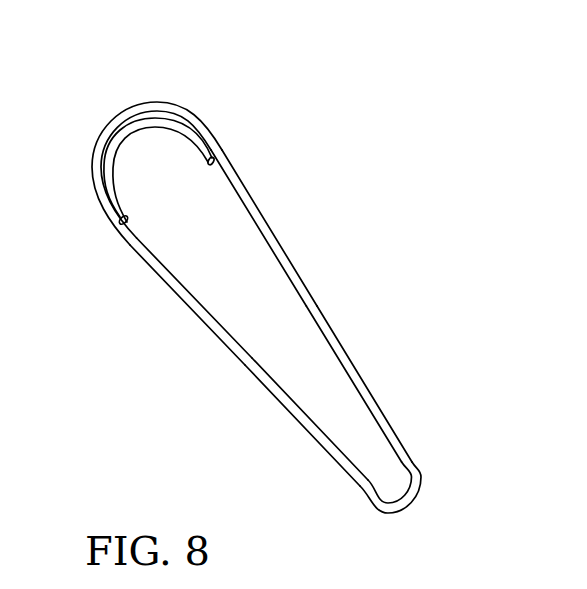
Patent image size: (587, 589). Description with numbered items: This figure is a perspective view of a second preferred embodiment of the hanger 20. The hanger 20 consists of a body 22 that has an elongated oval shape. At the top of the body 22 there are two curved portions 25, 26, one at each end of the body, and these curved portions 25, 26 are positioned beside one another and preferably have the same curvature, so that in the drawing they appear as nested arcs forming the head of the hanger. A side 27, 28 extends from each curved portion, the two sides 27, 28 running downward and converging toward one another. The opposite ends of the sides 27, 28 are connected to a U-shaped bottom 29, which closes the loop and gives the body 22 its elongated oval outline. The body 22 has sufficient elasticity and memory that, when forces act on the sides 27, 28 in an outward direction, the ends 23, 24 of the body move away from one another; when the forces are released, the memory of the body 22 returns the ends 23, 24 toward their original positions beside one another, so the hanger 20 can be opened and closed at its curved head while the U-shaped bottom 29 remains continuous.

The hanger 20 is at (254, 294).
The body 22 is at (267, 321).
The end 23 is at (231, 165).
The end 24 is at (129, 242).
The curved portion 25 is at (133, 127).
The curved portion 26 is at (190, 110).
The side 27 is at (258, 381).
The side 28 is at (326, 321).
The U-shaped bottom 29 is at (405, 505).